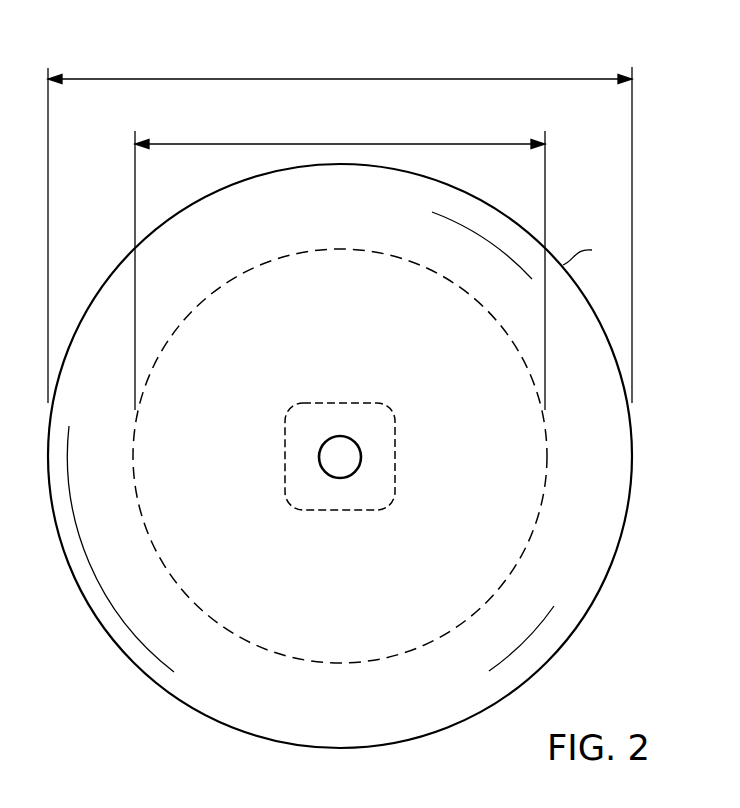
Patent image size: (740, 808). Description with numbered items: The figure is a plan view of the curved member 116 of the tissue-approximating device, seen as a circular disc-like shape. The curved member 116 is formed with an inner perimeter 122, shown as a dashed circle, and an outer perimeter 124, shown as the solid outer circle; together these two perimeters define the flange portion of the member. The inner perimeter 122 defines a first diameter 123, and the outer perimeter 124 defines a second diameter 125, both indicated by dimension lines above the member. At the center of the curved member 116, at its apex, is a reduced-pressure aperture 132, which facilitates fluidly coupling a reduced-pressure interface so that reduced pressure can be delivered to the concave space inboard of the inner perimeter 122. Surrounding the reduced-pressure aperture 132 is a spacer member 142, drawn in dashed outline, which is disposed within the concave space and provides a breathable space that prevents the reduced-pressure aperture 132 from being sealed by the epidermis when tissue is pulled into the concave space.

The curved member 116 is at (320, 219).
The inner perimeter 122 is at (547, 440).
The first diameter 123 is at (340, 143).
The outer perimeter 124 is at (589, 244).
The second diameter 125 is at (265, 79).
The reduced-pressure aperture 132 is at (340, 478).
The spacer member 142 is at (285, 450).